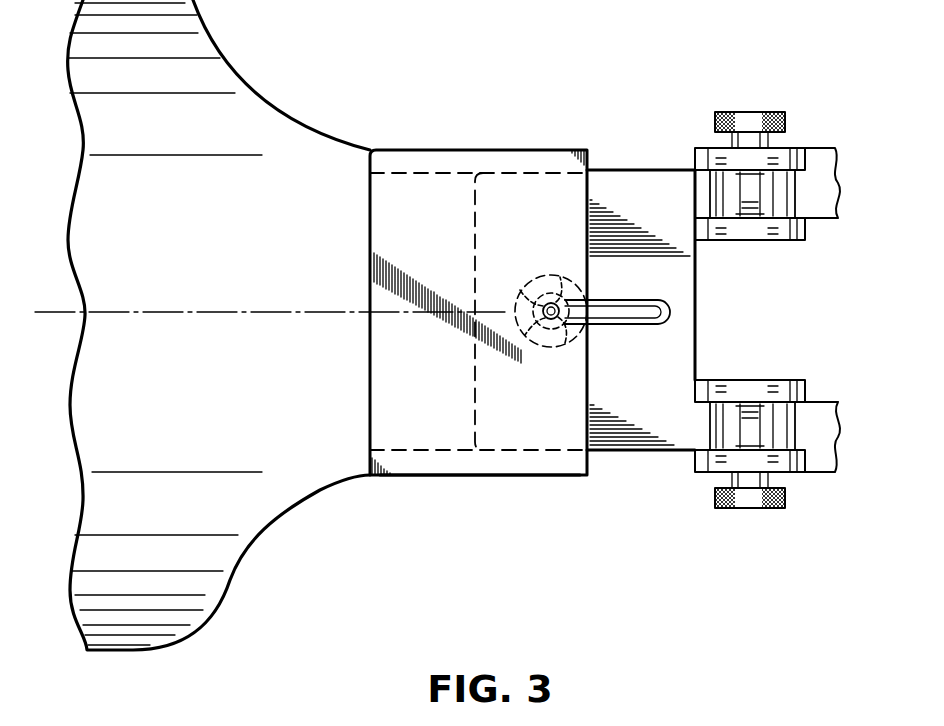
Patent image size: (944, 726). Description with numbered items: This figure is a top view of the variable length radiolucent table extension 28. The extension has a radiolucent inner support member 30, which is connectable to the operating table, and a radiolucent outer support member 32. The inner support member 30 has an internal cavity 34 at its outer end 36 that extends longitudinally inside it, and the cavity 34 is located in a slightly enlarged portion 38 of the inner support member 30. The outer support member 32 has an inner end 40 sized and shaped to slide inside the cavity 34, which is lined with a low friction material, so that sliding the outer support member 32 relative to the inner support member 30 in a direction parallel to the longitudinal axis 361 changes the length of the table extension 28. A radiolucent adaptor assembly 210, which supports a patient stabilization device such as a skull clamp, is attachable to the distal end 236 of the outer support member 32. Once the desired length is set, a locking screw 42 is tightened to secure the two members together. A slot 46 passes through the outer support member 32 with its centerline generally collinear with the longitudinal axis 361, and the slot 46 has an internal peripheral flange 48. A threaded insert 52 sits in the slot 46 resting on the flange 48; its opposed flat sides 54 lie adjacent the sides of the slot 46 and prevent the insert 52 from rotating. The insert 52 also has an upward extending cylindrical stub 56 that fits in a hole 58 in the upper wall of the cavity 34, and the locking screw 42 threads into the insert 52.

The radiolucent table extension 28 is at (675, 258).
The radiolucent inner support member 30 is at (249, 85).
The radiolucent outer support member 32 is at (652, 455).
The internal cavity 34 is at (410, 448).
The outer end 36 is at (590, 160).
The enlarged portion 38 is at (466, 478).
The inner end 40 is at (470, 240).
The locking screw 42 is at (551, 262).
The slot 46 is at (623, 300).
The internal peripheral flange 48 is at (662, 325).
The threaded insert 52 is at (495, 350).
The opposed flat sides 54 is at (527, 260).
The cylindrical stub 56 is at (538, 327).
The hole 58 is at (542, 311).
The radiolucent adaptor assembly 210 is at (812, 98).
The distal end 236 is at (697, 290).
The longitudinal axis 361 is at (150, 311).